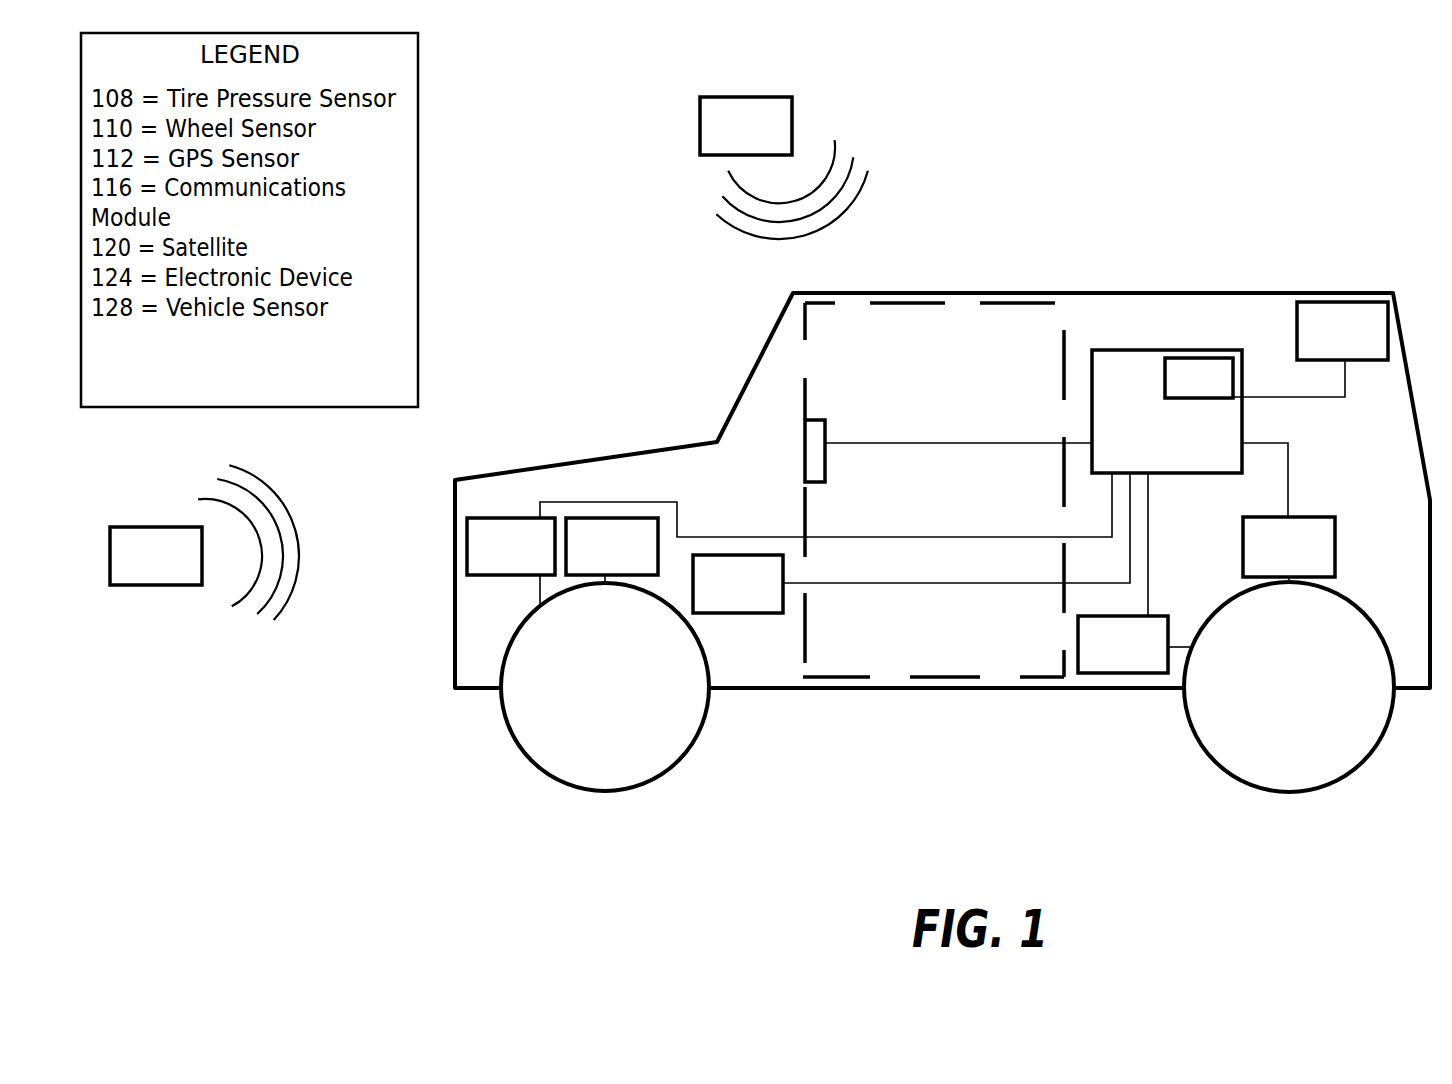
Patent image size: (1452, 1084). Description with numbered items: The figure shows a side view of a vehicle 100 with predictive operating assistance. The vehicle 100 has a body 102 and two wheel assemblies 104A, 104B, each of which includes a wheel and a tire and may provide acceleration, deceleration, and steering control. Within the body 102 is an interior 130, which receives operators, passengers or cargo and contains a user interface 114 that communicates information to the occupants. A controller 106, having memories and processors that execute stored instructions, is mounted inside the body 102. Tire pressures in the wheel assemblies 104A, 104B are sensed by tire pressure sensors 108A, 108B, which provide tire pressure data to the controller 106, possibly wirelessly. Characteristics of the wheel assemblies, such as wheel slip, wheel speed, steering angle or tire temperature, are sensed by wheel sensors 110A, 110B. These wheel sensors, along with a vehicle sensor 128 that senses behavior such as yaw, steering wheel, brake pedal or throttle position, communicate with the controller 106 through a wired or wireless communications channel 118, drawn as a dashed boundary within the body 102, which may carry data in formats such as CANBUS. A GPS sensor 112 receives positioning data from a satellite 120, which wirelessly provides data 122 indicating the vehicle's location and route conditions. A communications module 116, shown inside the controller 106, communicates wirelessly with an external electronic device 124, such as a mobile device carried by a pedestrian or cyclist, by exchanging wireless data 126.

The vehicle 100 is at (562, 394).
The body 102 is at (1057, 292).
The wheel assembly 104A is at (557, 778).
The wheel assembly 104B is at (1334, 785).
The controller 106 is at (1167, 411).
The tire pressure sensor 108A is at (511, 546).
The tire pressure sensor 108B is at (1123, 644).
The wheel sensor 110A is at (612, 546).
The wheel sensor 110B is at (1289, 547).
The GPS sensor 112 is at (1342, 331).
The user interface 114 is at (802, 462).
The communications module 116 is at (1199, 378).
The communications channel 118 is at (972, 389).
The satellite 120 is at (746, 126).
The data 122 is at (894, 266).
The electronic device 124 is at (156, 556).
The wireless data 126 is at (347, 524).
The vehicle sensor 128 is at (738, 584).
The interior 130 is at (998, 502).